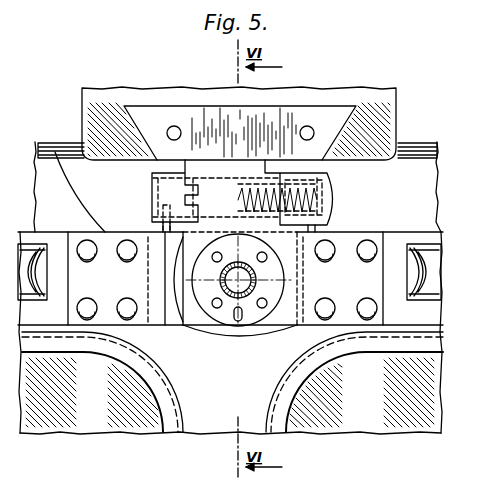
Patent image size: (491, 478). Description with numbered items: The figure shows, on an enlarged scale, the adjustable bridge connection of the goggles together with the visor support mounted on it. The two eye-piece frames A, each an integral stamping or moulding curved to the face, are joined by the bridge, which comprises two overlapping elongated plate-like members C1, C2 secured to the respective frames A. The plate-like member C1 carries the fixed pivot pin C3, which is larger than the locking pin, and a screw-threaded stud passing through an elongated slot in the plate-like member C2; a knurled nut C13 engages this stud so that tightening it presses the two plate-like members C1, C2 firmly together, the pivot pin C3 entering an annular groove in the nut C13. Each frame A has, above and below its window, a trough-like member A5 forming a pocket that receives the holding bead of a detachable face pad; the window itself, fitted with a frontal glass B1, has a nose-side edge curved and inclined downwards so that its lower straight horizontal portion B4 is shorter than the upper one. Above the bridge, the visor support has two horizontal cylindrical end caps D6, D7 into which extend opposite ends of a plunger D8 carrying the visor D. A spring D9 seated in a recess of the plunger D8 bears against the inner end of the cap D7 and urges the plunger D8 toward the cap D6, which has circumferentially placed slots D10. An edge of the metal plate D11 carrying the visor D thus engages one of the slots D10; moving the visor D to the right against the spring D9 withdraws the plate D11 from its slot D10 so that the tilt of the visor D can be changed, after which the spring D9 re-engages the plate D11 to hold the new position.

The visor D is at (391, 99).
The metal plate D11 is at (147, 116).
The plunger D8 is at (223, 187).
The plate-like member C1 is at (58, 158).
The cylindrical end cap D6 is at (152, 178).
The slots D10 is at (163, 205).
The cylindrical end cap D7 is at (334, 186).
The spring D9 is at (330, 202).
The plate-like member C2 is at (358, 237).
The eye-piece frame A is at (57, 245).
The trough-like member A5 is at (410, 281).
The knurled nut C13 is at (263, 333).
The pivot pin C3 is at (236, 323).
The lower straight horizontal portion B4 is at (272, 400).
The frontal glass B1 is at (392, 422).